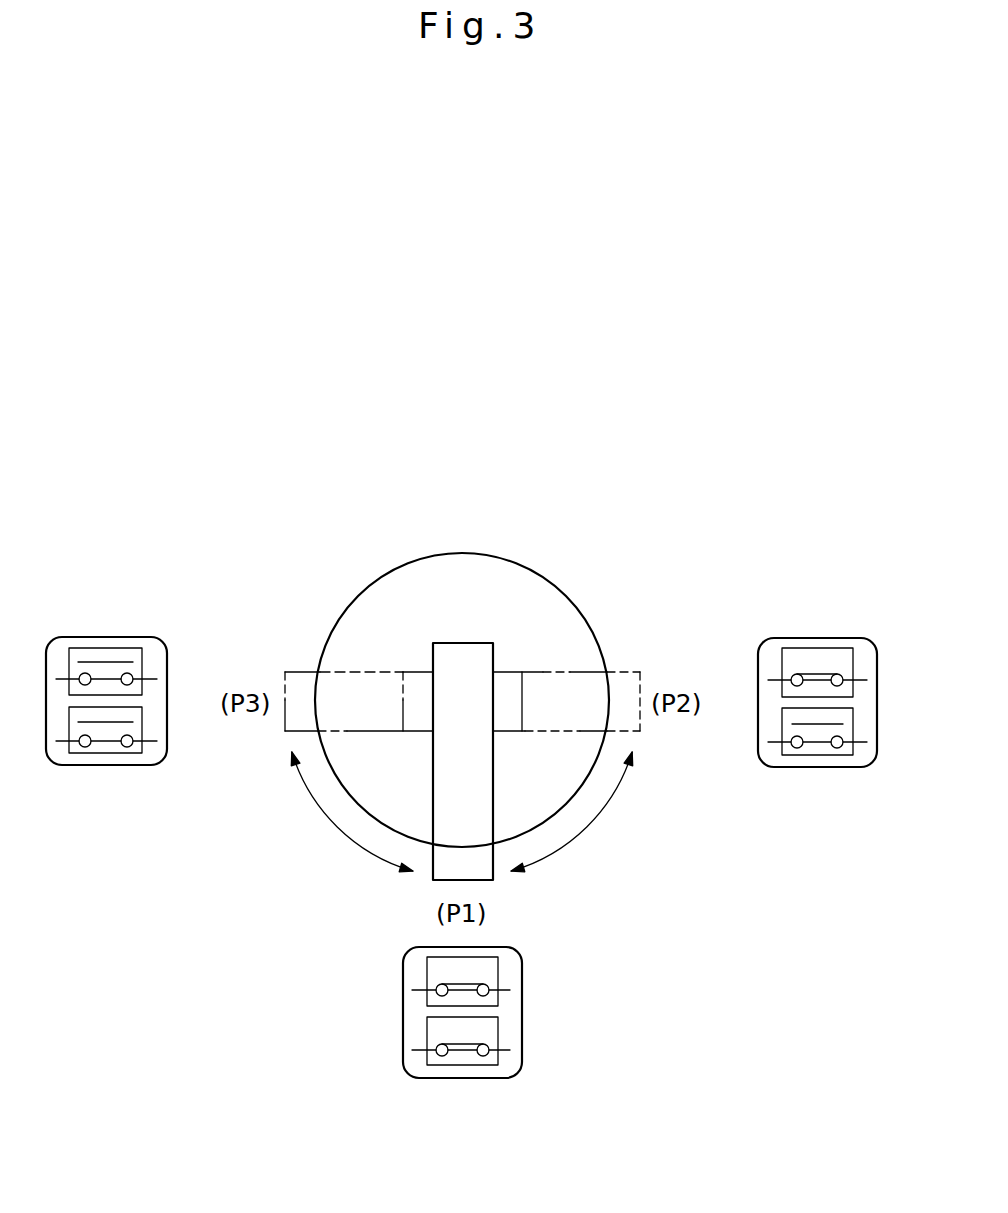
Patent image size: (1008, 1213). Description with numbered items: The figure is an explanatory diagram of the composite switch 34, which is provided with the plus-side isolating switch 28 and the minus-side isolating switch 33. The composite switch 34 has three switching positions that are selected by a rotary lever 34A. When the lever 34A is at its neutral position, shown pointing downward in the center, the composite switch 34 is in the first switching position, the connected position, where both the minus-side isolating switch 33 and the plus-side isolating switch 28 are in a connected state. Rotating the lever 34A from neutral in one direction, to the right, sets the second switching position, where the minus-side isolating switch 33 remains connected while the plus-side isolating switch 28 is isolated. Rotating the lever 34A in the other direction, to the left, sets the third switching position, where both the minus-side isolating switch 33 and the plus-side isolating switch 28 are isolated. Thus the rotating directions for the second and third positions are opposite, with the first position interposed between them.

The composite switch 34 is at (560, 545).
The rotary lever 34A is at (298, 670).
The minus-side isolating switch 33 is at (107, 646).
The plus-side isolating switch 28 is at (108, 754).